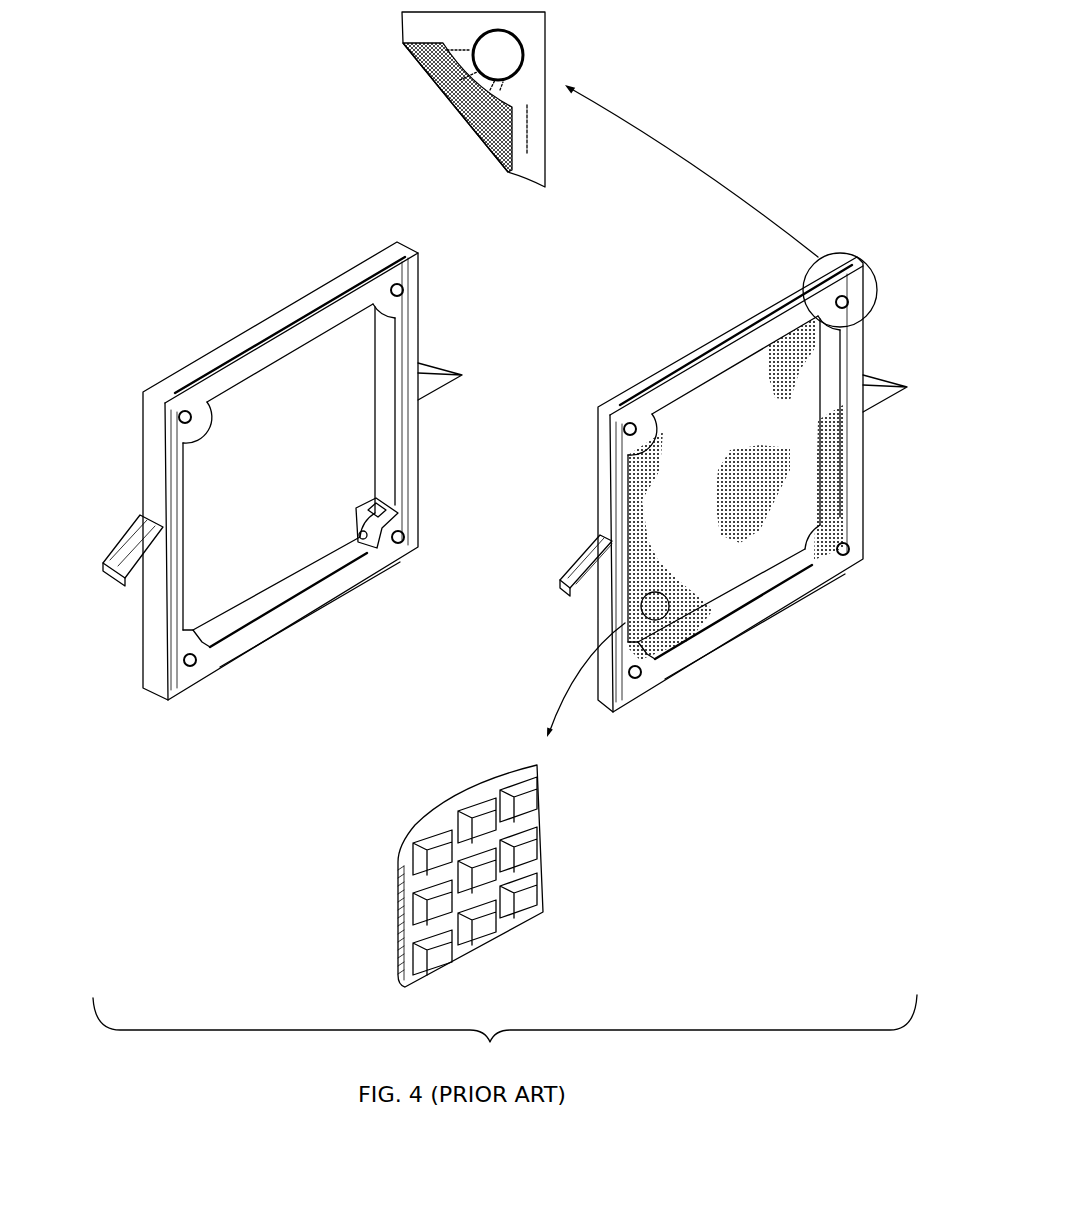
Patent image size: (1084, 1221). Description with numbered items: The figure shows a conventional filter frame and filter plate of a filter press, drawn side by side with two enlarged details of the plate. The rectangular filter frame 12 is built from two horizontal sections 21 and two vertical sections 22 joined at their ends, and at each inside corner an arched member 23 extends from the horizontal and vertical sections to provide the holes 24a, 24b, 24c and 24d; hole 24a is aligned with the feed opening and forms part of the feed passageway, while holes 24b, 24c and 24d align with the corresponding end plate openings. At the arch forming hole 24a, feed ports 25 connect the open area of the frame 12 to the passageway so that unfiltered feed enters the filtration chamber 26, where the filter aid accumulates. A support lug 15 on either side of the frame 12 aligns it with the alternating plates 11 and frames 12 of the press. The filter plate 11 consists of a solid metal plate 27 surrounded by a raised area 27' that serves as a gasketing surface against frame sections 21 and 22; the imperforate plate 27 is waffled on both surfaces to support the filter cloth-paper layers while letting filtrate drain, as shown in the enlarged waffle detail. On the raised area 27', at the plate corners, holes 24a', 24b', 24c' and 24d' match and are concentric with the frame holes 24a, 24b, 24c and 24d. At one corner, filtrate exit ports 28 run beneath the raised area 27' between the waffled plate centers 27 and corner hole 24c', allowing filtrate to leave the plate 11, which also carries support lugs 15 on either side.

The filter plate 11 is at (684, 332).
The filter frame 12 is at (243, 309).
The support lug 15 is at (138, 522).
The horizontal section 21 is at (333, 298).
The vertical section 22 is at (410, 447).
The arched member 23 is at (372, 312).
The hole 24a is at (428, 534).
The hole 24b is at (172, 381).
The hole 24c is at (428, 285).
The hole 24d is at (206, 691).
The hole 24a' is at (871, 577).
The hole 24b' is at (590, 433).
The hole 24c' is at (698, 163).
The hole 24d' is at (672, 686).
The feed port 25 is at (366, 511).
The filtration chamber 26 is at (254, 445).
The solid metal plate 27 is at (649, 652).
The raised area 27' is at (653, 268).
The filtrate exit port 28 is at (846, 338).